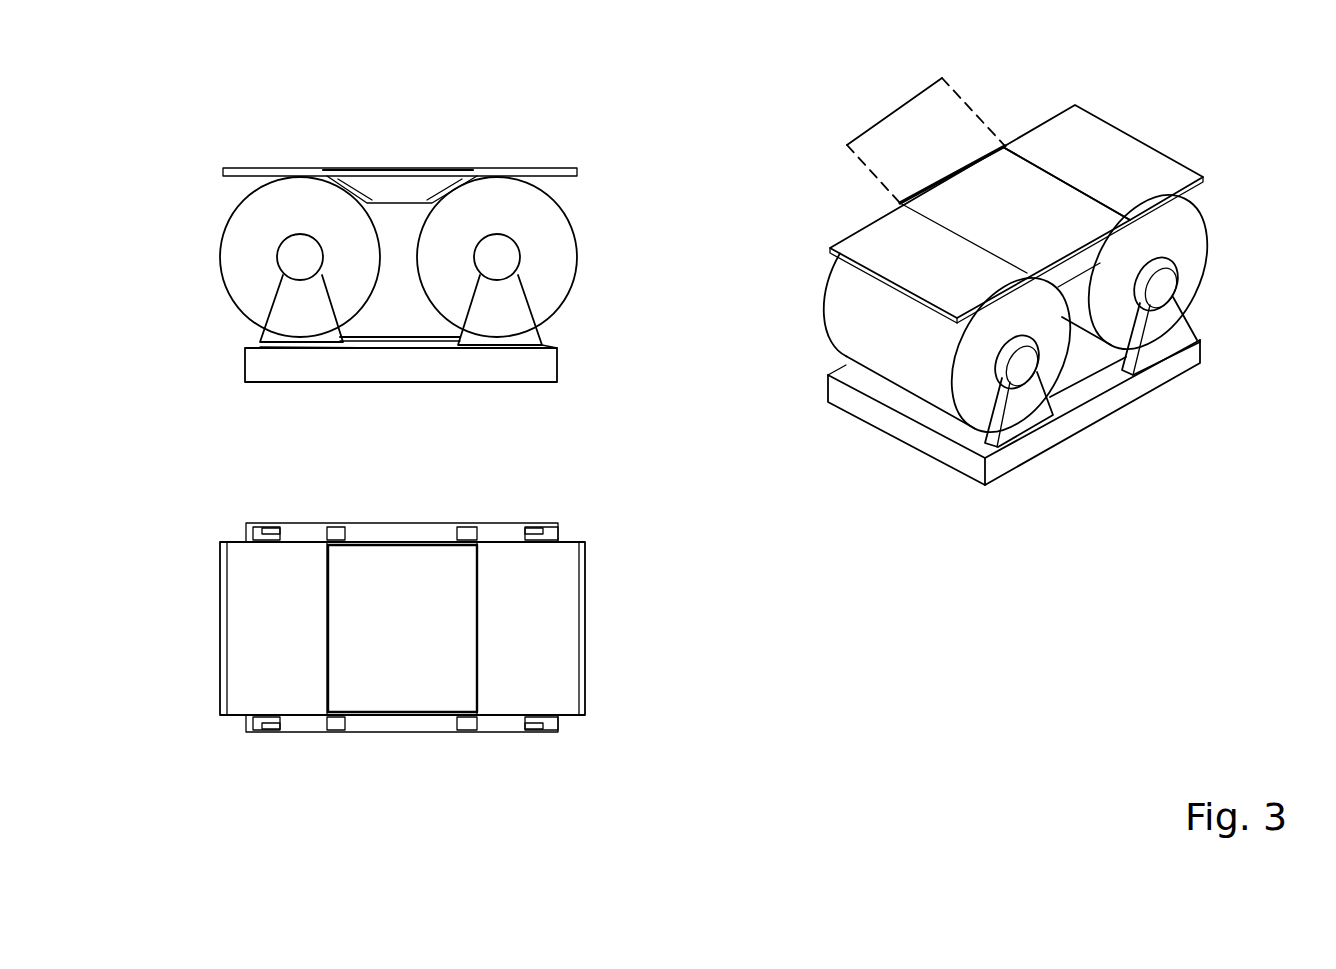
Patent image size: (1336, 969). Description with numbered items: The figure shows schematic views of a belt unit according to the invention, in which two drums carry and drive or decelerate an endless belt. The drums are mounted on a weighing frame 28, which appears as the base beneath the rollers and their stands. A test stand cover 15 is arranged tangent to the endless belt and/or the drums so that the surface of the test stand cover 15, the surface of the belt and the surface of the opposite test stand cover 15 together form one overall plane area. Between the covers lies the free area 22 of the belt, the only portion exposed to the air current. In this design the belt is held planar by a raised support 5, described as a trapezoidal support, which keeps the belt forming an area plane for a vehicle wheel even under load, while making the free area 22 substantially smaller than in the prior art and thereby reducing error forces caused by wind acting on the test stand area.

The support 5 is at (392, 190).
The test stand cover 15 is at (262, 627).
The free area 22 is at (418, 598).
The weighing frame 28 is at (295, 358).